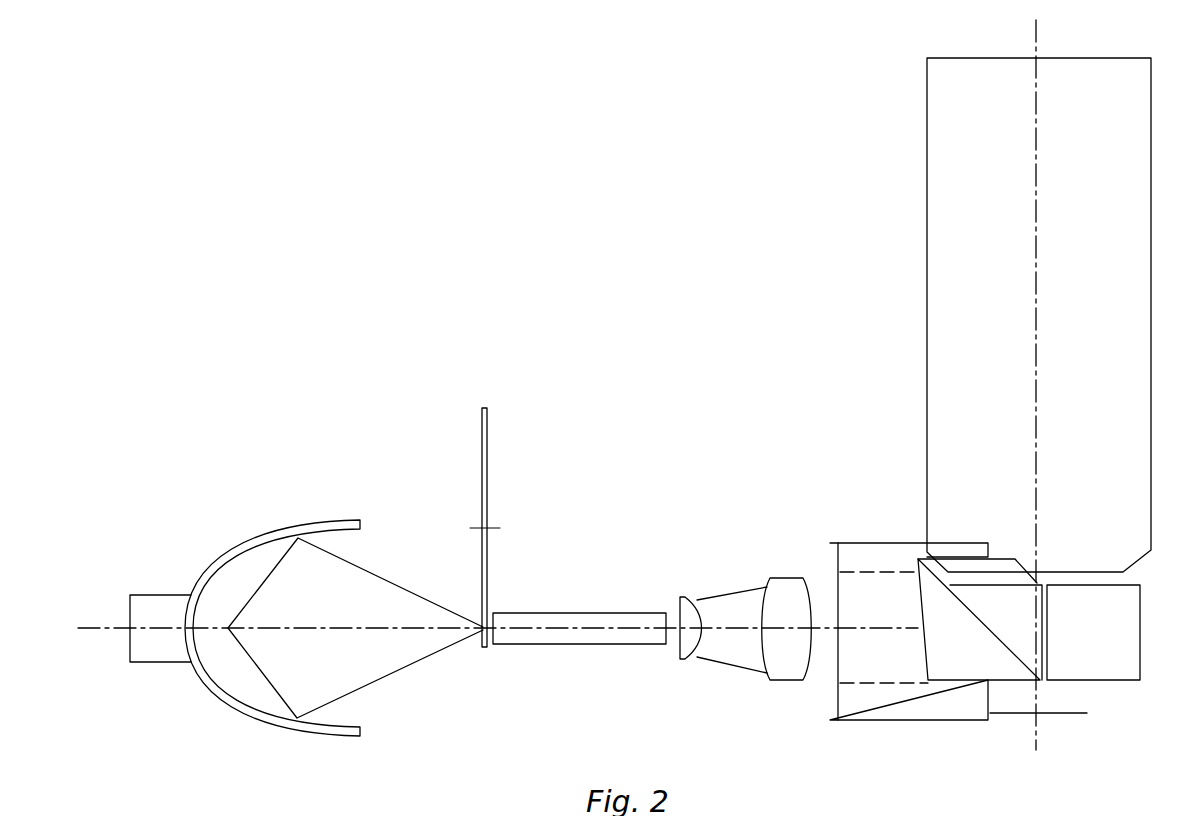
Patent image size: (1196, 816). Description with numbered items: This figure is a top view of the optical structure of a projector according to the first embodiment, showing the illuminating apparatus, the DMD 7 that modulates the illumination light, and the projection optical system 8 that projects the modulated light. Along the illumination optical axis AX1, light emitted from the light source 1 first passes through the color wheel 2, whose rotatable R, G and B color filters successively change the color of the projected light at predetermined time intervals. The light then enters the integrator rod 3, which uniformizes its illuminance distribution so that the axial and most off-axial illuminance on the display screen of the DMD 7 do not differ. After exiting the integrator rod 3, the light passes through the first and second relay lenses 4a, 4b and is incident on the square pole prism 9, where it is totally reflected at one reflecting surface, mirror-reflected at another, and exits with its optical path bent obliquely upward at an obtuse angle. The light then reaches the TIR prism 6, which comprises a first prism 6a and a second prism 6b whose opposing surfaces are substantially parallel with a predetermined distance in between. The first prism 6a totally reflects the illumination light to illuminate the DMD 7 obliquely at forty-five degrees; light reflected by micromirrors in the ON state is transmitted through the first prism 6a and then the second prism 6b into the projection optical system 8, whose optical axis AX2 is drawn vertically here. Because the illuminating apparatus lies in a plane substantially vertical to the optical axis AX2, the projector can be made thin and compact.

The light source 1 is at (260, 540).
The color wheel 2 is at (486, 406).
The integrator rod 3 is at (546, 613).
The first relay lens 4a is at (682, 597).
The second relay lens 4b is at (785, 577).
The TIR prism 6 is at (998, 666).
The first prism 6a is at (955, 667).
The second prism 6b is at (1123, 675).
The DMD 7 is at (1043, 717).
The projection optical system 8 is at (927, 320).
The prism 9 is at (880, 542).
The optical axis AX1 is at (615, 631).
The optical axis of the projection optical system AX2 is at (1040, 253).